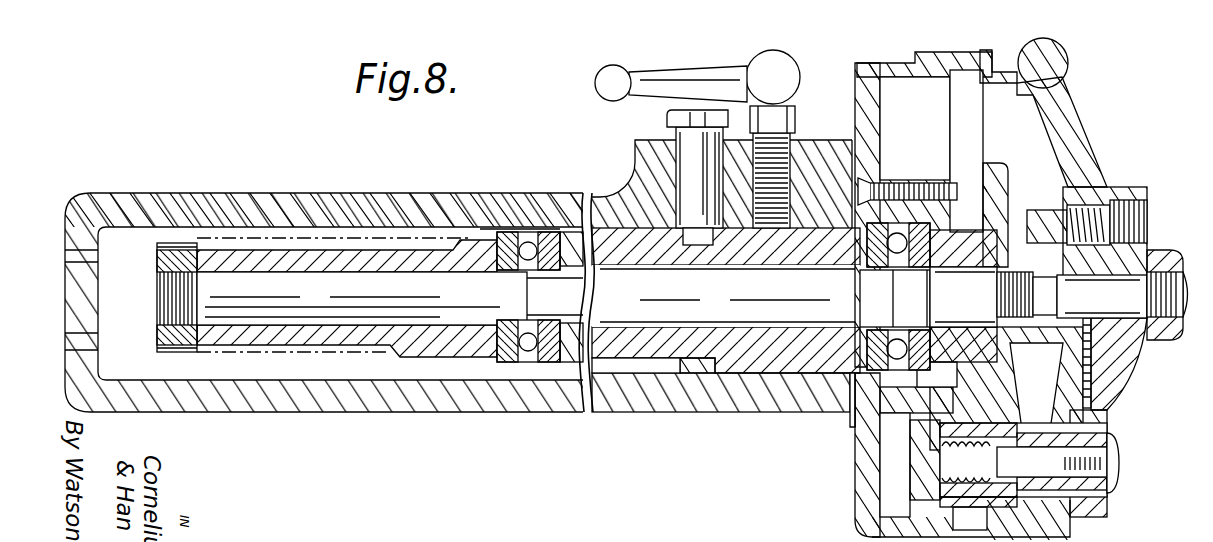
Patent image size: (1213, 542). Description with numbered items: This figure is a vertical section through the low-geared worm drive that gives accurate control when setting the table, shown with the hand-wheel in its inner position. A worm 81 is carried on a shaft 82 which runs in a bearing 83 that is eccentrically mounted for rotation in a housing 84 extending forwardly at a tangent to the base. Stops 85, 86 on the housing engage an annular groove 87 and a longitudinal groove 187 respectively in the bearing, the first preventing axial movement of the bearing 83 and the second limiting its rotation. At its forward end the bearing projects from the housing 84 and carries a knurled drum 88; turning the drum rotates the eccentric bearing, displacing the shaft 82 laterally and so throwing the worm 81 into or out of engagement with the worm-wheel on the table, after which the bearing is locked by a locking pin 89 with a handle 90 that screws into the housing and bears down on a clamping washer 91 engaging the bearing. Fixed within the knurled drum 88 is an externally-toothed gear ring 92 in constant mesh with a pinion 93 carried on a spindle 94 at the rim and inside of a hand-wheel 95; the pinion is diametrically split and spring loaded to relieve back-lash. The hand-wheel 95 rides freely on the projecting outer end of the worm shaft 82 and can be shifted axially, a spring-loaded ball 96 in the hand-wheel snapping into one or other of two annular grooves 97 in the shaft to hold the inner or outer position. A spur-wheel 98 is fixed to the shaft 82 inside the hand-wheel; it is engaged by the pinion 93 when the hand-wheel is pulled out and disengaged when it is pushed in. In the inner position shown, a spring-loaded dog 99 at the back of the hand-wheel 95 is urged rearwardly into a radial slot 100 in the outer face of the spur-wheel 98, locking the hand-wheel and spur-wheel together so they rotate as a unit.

The worm 81 is at (332, 245).
The shaft 82 is at (547, 293).
The bearing 83 is at (610, 238).
The housing 84 is at (757, 410).
The stop 85 is at (633, 172).
The stop 86 is at (702, 373).
The annular groove 87 is at (680, 150).
The knurled drum 88 is at (947, 60).
The locking pin 89 is at (790, 128).
The handle 90 is at (598, 88).
The clamping washer 91 is at (795, 220).
The externally-toothed gear ring 92 is at (855, 460).
The pinion 93 is at (1013, 430).
The spindle 94 is at (1103, 495).
The hand-wheel 95 is at (1068, 130).
The spring-loaded ball 96 is at (1117, 352).
The annular grooves 97 is at (1050, 275).
The spur-wheel 98 is at (985, 177).
The spring-loaded dog 99 is at (1032, 212).
The radial slot 100 is at (1007, 193).
The longitudinal groove 187 is at (617, 373).